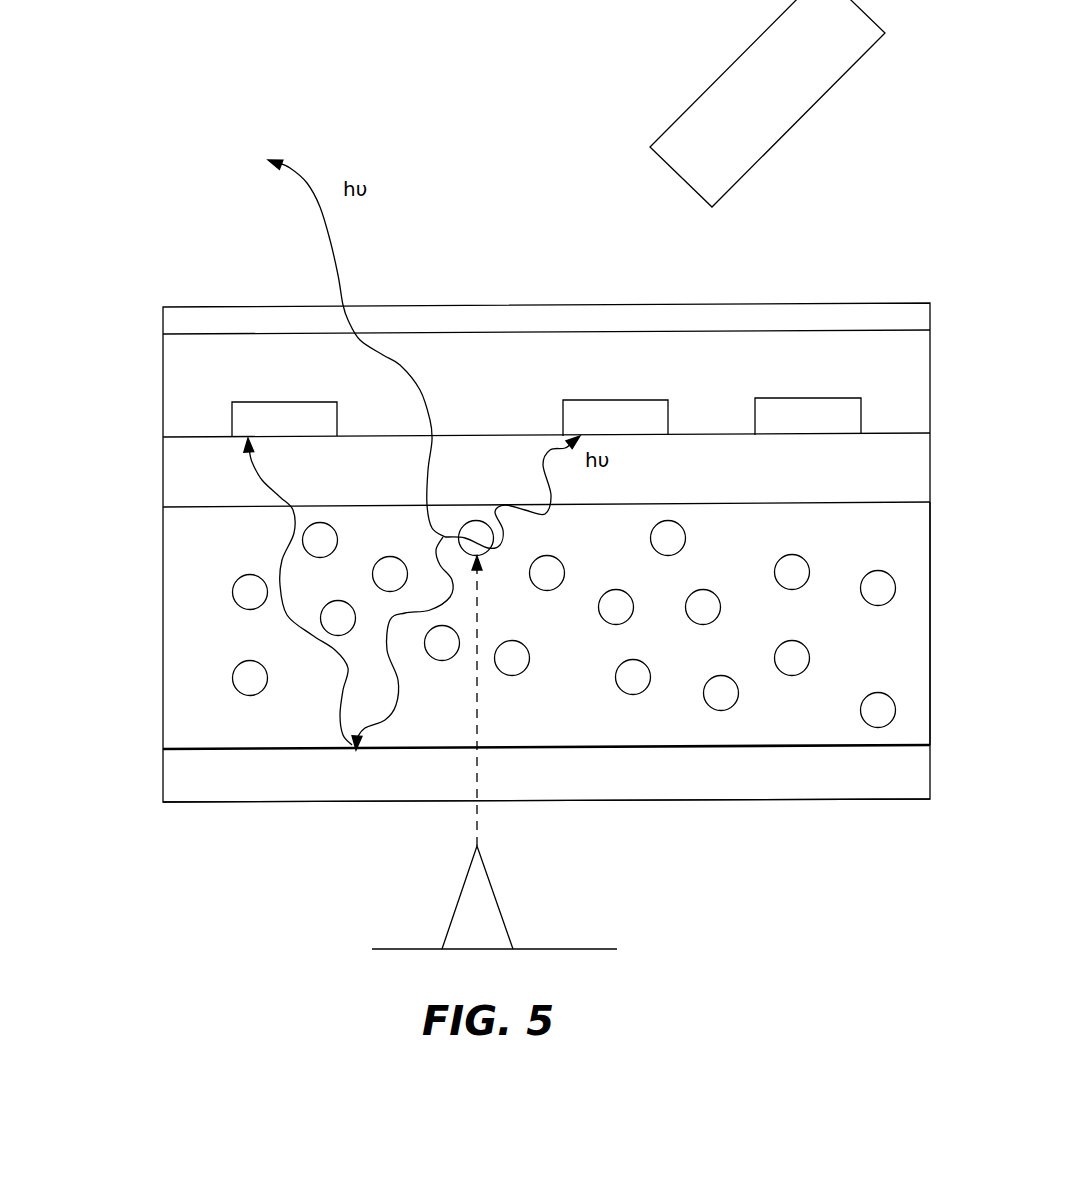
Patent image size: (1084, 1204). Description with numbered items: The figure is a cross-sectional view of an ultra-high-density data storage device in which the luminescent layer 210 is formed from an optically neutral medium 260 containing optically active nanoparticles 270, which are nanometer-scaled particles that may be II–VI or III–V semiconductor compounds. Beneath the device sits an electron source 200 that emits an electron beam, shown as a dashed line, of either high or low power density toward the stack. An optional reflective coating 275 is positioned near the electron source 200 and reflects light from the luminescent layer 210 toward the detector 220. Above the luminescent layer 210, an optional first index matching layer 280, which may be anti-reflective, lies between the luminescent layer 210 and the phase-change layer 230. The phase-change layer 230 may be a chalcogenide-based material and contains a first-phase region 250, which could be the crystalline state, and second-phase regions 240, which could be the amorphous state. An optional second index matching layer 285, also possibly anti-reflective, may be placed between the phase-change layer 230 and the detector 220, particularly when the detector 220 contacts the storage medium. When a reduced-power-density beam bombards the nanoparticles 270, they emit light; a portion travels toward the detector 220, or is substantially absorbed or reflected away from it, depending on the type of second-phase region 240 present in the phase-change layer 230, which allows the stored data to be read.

The electron source 200 is at (472, 927).
The luminescent layer 210 is at (791, 720).
The detector 220 is at (768, 60).
The phase-change layer 230 is at (775, 350).
The second-phase region 240 is at (285, 418).
The first-phase region 250 is at (189, 352).
The optically neutral medium 260 is at (321, 712).
The optically active nanoparticles 270 is at (248, 676).
The reflective coating 275 is at (633, 781).
The first index matching layer 280 is at (198, 454).
The second index matching layer 285 is at (856, 318).